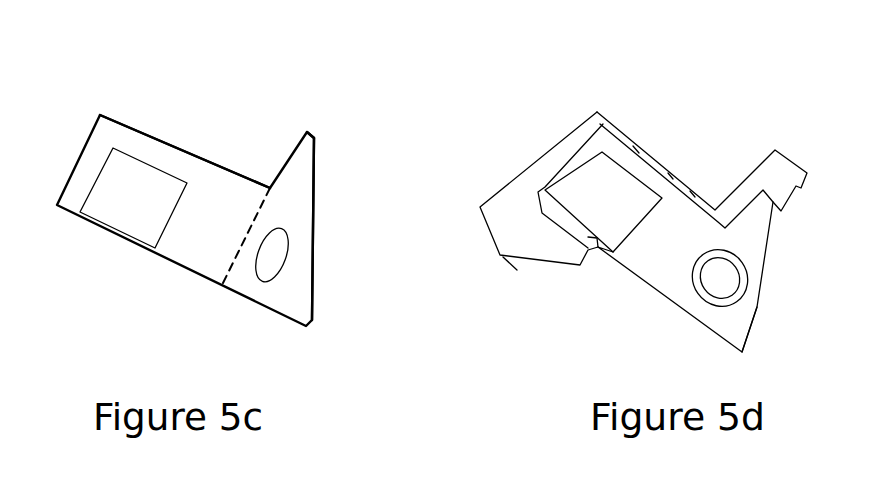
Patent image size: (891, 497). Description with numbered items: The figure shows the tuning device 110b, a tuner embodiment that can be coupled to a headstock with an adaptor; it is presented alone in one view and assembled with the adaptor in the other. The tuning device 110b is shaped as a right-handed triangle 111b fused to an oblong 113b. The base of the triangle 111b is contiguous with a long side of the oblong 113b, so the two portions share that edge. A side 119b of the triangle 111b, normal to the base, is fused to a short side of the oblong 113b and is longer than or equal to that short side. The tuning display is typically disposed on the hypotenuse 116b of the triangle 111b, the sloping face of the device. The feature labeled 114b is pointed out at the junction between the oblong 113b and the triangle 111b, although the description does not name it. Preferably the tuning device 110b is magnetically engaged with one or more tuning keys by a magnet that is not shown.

In FIG. 5C, the tuning device 110b is at (333, 157).
In FIG. 5D, the tuning device 110b is at (795, 247).
In FIG. 5C, the right-handed triangle 111b is at (307, 345).
In FIG. 5C, the oblong 113b is at (202, 297).
In FIG. 5C, the bend 114b is at (215, 166).
In FIG. 5C, the hypotenuse 116b is at (316, 215).
In FIG. 5D, the hypotenuse 116b is at (757, 308).
In FIG. 5C, the side of the triangle 119b is at (302, 131).